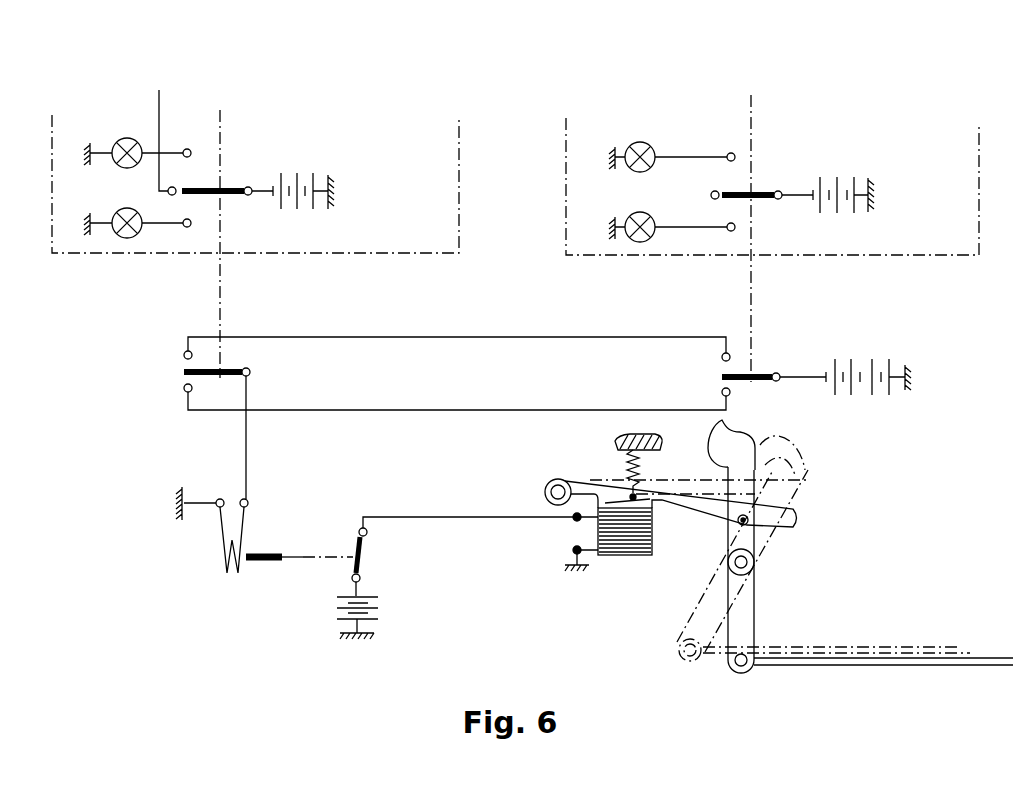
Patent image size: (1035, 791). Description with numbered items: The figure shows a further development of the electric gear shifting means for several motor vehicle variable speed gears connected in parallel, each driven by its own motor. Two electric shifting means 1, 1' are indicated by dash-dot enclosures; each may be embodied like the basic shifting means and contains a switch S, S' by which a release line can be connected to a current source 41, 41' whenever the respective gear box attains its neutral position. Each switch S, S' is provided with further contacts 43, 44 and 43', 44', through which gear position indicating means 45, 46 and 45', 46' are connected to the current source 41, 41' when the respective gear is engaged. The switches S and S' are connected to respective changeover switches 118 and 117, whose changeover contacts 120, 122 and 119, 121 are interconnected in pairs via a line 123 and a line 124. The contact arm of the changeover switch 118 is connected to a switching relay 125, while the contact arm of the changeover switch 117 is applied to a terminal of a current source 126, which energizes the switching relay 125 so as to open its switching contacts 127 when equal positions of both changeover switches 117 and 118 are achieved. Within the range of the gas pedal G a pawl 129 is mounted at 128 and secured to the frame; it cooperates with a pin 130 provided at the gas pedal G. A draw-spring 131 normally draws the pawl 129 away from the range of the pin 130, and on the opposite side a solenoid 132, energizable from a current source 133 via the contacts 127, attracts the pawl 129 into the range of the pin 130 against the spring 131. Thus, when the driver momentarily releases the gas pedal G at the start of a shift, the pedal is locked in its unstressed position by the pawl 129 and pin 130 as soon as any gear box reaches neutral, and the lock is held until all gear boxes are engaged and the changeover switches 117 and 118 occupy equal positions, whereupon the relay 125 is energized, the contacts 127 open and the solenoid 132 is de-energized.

The electric shifting means 1 is at (282, 234).
The electric shifting means 1' is at (792, 238).
The current source 41 is at (293, 206).
The current source 41' is at (828, 211).
The contact 43 is at (173, 140).
The contact 43' is at (702, 144).
The contact 44 is at (170, 237).
The contact 44' is at (700, 241).
The gear position indicating means 45 is at (113, 136).
The gear position indicating means 45' is at (636, 140).
The gear position indicating means 46 is at (113, 232).
The gear position indicating means 46' is at (646, 236).
The switch S is at (220, 167).
The switch S' is at (759, 172).
The changeover switch 117 is at (762, 368).
The changeover switch 118 is at (228, 353).
The changeover contact 119 is at (722, 357).
The changeover contact 120 is at (184, 355).
The changeover contact 121 is at (722, 393).
The changeover contact 122 is at (184, 390).
The line 123 is at (488, 336).
The line 124 is at (513, 412).
The switching relay 125 is at (300, 552).
The current source 126 is at (858, 360).
The switching contacts 127 is at (368, 557).
The mounting 128 is at (545, 493).
The pawl 129 is at (697, 503).
The pin 130 is at (752, 524).
The draw-spring 131 is at (625, 470).
The solenoid 132 is at (628, 558).
The current source 133 is at (372, 614).
The gas pedal G is at (808, 470).